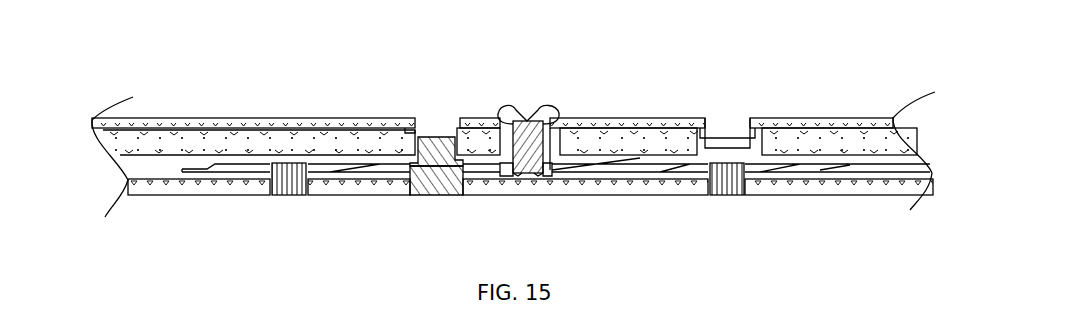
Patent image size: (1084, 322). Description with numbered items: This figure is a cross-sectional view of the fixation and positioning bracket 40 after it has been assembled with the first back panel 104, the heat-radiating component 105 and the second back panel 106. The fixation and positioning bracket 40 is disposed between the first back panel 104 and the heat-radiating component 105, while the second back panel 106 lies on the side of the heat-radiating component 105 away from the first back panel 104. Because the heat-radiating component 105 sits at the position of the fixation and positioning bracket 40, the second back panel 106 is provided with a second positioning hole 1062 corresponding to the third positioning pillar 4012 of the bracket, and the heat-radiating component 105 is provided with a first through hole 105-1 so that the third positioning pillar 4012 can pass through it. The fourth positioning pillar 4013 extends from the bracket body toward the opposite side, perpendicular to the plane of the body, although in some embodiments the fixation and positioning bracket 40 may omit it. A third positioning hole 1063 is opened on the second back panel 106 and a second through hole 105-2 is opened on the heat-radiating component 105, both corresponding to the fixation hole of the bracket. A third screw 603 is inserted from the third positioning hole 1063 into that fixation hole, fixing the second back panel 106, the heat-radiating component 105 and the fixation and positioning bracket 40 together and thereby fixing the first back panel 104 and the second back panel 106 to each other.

The second back panel 106 is at (265, 119).
The heat-radiating component 105 is at (333, 144).
The second positioning hole 1062 is at (410, 122).
The third positioning pillar 4012 is at (436, 137).
The fourth positioning pillar 4013 is at (433, 174).
The first through hole 105-1 is at (460, 129).
The third positioning hole 1063 is at (526, 108).
The third screw 603 is at (515, 178).
The second through hole 105-2 is at (549, 145).
The fixation and positioning bracket 40 is at (647, 192).
The first back panel 104 is at (783, 188).